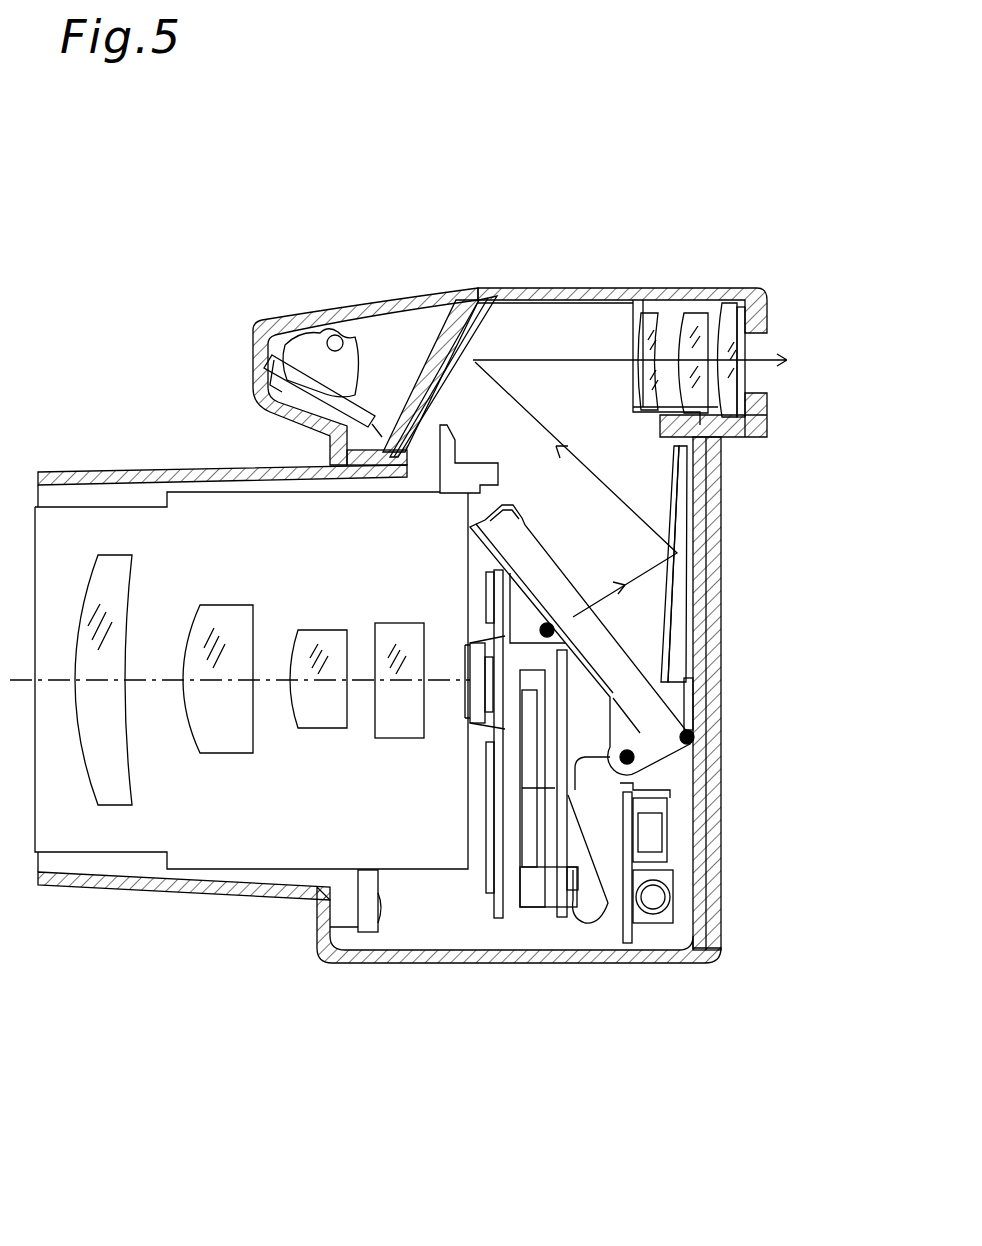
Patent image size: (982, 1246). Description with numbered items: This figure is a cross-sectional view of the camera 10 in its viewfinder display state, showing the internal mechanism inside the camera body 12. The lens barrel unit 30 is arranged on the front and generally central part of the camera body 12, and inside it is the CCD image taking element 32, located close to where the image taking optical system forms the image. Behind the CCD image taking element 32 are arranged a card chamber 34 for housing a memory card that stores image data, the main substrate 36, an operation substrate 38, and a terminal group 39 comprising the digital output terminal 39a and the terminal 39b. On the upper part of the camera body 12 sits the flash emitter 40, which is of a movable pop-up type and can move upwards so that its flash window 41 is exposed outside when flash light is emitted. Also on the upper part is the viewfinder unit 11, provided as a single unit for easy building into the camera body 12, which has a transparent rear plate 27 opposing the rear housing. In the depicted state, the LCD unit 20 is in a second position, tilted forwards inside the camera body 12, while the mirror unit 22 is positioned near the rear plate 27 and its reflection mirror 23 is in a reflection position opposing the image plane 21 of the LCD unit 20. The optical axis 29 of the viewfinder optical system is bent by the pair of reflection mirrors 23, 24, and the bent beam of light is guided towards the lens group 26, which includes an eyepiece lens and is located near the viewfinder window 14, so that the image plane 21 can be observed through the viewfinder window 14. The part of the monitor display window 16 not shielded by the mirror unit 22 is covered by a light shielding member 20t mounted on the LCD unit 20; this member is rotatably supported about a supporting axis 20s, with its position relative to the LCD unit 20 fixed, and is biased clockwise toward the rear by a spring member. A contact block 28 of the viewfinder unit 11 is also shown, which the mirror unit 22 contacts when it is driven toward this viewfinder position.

The camera 10 is at (640, 180).
The viewfinder unit 11 is at (594, 337).
The camera body 12 is at (558, 288).
The viewfinder window 14 is at (745, 336).
The monitor display window 16 is at (718, 537).
The LCD unit 20 is at (618, 640).
The light shielding member 20t is at (695, 695).
The supporting axis 20s is at (692, 737).
The image plane 21 is at (555, 568).
The mirror unit 22 is at (680, 600).
The reflection mirror 23 is at (670, 510).
The reflection mirror 24 is at (483, 336).
The lens group 26 is at (729, 318).
The rear plate 27 is at (700, 635).
The contact block 28 is at (483, 468).
The optical axis 29 is at (535, 422).
The lens barrel unit 30 is at (125, 833).
The CCD image taking element 32 is at (465, 660).
The card chamber 34 is at (530, 870).
The main substrate 36 is at (568, 897).
The operation substrate 38 is at (627, 930).
The light emitting unit 39 is at (748, 856).
The digital output terminal 39a is at (653, 833).
The light receiving element 39b is at (653, 895).
The flash emitter 40 is at (313, 352).
The flash window 41 is at (282, 413).